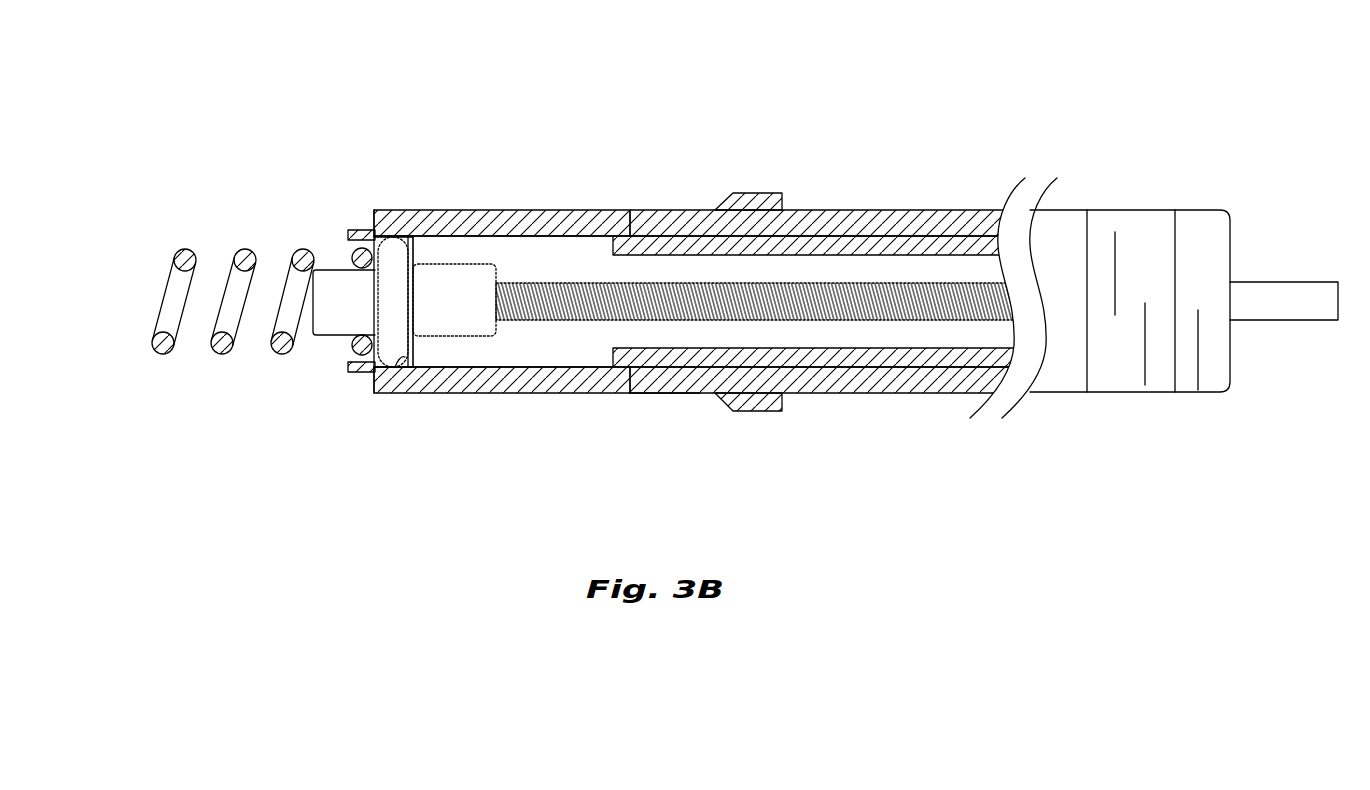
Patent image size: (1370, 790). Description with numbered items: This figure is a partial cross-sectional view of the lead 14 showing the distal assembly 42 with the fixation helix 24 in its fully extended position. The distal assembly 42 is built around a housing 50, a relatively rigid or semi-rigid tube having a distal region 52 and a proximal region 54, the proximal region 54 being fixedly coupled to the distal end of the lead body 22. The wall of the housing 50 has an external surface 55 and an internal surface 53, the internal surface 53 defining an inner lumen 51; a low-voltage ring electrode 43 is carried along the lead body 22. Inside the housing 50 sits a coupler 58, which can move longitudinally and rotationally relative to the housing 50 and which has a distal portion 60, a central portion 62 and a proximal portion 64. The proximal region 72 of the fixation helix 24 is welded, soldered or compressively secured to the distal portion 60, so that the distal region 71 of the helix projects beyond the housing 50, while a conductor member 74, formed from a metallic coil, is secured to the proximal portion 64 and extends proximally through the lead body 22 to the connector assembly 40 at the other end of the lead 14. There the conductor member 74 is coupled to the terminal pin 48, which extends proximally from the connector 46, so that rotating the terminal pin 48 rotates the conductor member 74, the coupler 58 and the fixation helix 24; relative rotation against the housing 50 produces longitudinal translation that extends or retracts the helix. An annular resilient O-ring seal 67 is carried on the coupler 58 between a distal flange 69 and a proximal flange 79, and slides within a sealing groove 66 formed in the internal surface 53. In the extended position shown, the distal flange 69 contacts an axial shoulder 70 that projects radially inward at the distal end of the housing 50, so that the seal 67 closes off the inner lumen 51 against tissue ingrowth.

The lead 14 is at (679, 112).
The distal assembly 42 is at (195, 260).
The distal region of fixation helix 71 is at (150, 295).
The fixation helix 24 is at (222, 315).
The distal portion of coupler 60 is at (330, 315).
The proximal region of fixation helix 72 is at (340, 358).
The axial shoulder 70 is at (352, 371).
The distal region of housing 52 is at (505, 436).
The external surface 55 is at (812, 205).
The housing 50 is at (639, 214).
The electrode 43 is at (764, 194).
The conductor member 74 is at (897, 283).
The sealing groove 66 is at (462, 238).
The internal surface 53 is at (505, 240).
The inner lumen 51 is at (537, 347).
The proximal region of housing 54 is at (918, 416).
The coupler 58 is at (455, 342).
The distal flange 69 is at (373, 214).
The seal 67 is at (397, 245).
The proximal flange 79 is at (413, 240).
The central portion of coupler 62 is at (403, 356).
The proximal portion of coupler 64 is at (433, 330).
The lead body 22 is at (1063, 373).
The connector assembly 40 is at (1130, 292).
The connector 46 is at (1180, 370).
The terminal pin 48 is at (1285, 306).